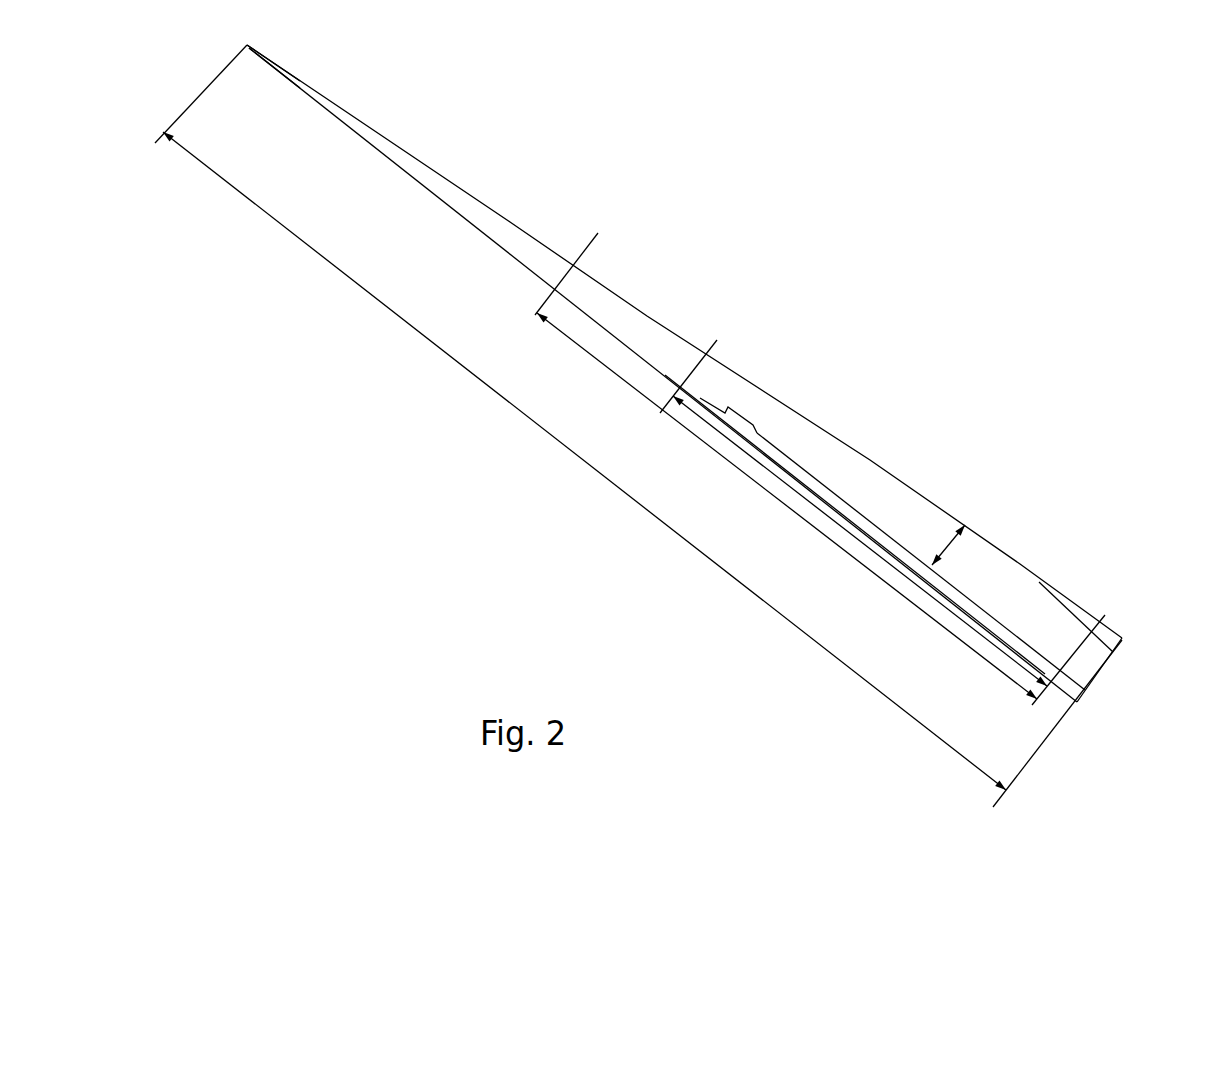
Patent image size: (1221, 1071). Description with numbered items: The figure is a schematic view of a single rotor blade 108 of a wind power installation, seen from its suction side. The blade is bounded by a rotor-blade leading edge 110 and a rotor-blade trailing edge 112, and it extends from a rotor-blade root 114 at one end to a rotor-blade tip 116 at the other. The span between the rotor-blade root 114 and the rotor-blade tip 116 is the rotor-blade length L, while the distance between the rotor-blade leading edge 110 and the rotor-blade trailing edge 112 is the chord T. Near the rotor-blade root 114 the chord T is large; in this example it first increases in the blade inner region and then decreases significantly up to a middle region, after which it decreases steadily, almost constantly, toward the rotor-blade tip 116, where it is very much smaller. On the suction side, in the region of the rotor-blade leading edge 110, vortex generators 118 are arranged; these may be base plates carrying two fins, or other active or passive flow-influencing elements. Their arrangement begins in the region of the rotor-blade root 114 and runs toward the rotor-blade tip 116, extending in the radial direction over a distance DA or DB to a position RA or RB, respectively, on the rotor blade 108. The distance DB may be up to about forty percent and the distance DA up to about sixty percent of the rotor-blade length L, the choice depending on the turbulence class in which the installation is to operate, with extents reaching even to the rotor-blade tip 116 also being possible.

The rotor blade 108 is at (652, 376).
The rotor-blade leading edge 110 is at (463, 219).
The rotor-blade trailing edge 112 is at (933, 497).
The rotor-blade root 114 is at (1107, 664).
The rotor-blade tip 116 is at (250, 49).
The vortex generators 118 is at (752, 408).
The rotor-blade length L is at (678, 531).
The chord T is at (947, 547).
The position RA is at (775, 466).
The position RB is at (659, 413).
The distance DA is at (775, 496).
The distance DB is at (838, 527).